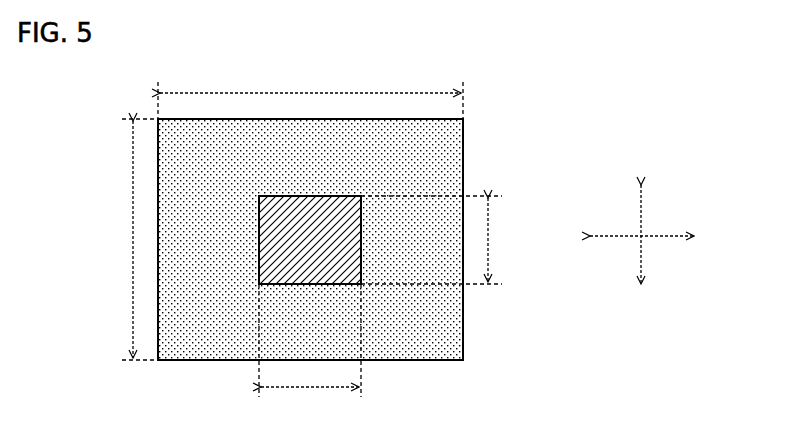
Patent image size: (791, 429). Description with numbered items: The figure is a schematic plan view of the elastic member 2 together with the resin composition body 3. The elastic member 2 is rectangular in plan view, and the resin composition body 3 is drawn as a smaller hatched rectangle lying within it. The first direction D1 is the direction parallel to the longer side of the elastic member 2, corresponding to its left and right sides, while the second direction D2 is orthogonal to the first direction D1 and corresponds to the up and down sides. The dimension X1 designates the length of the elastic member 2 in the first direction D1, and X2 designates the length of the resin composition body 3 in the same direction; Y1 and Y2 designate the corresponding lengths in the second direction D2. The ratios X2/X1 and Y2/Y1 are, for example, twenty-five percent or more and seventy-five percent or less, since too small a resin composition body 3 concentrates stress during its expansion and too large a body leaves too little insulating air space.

The elastic member 2 is at (447, 143).
The resin composition body 3 is at (348, 272).
The length of the elastic member in the first direction X1 is at (310, 88).
The length of the elastic member in the second direction Y1 is at (126, 239).
The length of the resin composition body in the first direction X2 is at (310, 354).
The length of the resin composition body in the second direction Y2 is at (442, 240).
The first direction D1 is at (659, 237).
The second direction D2 is at (640, 216).